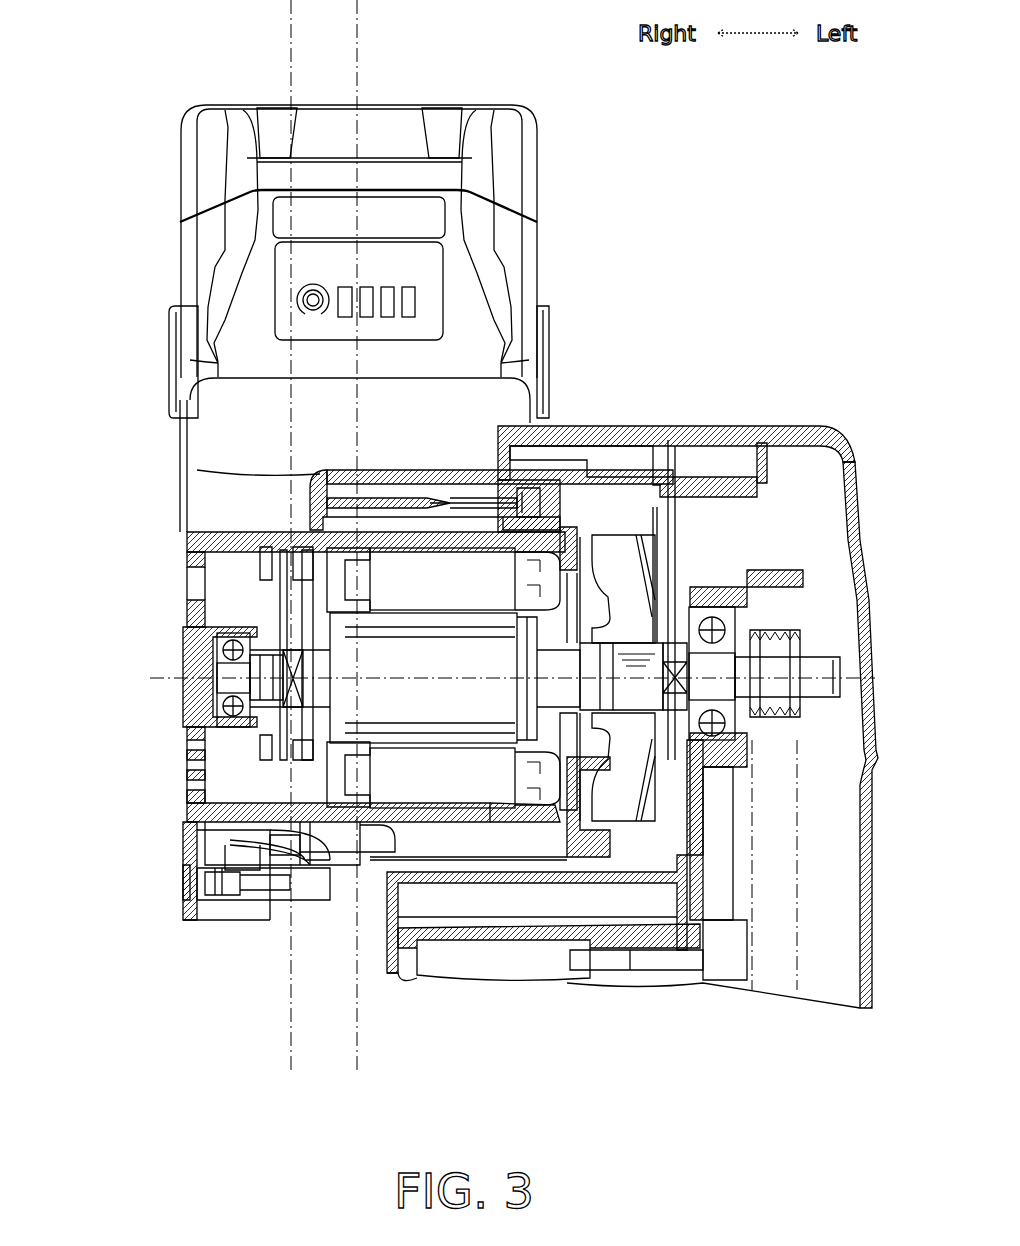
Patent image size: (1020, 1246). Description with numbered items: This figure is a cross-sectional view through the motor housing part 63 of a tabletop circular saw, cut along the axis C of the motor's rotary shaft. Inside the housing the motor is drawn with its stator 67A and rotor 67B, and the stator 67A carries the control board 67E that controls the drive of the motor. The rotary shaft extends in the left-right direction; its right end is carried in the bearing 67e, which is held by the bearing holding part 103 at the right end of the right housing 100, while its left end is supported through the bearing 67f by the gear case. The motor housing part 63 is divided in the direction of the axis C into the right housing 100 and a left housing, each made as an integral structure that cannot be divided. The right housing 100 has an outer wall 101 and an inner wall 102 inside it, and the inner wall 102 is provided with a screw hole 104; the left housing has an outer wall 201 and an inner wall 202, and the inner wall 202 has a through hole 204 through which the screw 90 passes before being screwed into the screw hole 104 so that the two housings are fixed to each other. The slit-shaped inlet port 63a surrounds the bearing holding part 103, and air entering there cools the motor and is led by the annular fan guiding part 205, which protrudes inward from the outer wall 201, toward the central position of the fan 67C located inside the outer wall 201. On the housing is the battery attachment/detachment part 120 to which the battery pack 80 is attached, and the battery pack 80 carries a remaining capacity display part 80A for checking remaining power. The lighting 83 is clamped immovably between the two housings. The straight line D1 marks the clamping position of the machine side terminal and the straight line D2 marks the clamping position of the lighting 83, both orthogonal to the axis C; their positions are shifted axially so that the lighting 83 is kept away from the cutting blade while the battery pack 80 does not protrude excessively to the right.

The motor housing part 63 is at (144, 938).
The inlet port 63a is at (187, 765).
The stator 67A is at (410, 677).
The rotor 67B is at (415, 678).
The fan 67C is at (633, 678).
The control board 67E is at (305, 865).
The bearing 67e is at (232, 650).
The bearing 67f is at (715, 630).
The battery pack 80 is at (505, 170).
The remaining capacity display part 80A is at (420, 308).
The lighting 83 is at (233, 900).
The screw 90 is at (573, 500).
The right housing 100 is at (183, 813).
The outer wall 101 is at (320, 474).
The inner wall 102 is at (365, 535).
The bearing holding part 103 is at (190, 716).
The screw hole 104 is at (200, 432).
The battery attachment/detachment part 120 is at (152, 332).
The outer wall 201 is at (417, 470).
The inner wall 202 is at (567, 483).
The through hole 204 is at (510, 497).
The fan guiding part 205 is at (580, 535).
The axis C is at (870, 748).
The straight line D1 is at (358, 553).
The straight line D2 is at (292, 553).